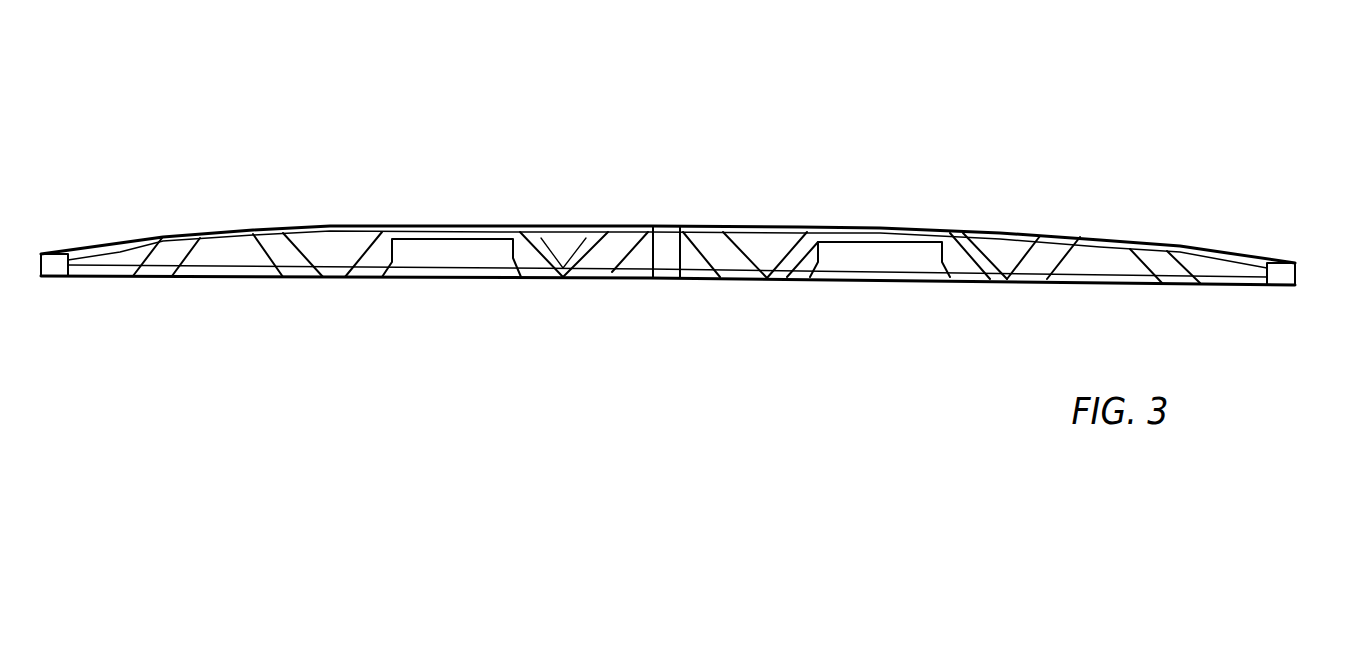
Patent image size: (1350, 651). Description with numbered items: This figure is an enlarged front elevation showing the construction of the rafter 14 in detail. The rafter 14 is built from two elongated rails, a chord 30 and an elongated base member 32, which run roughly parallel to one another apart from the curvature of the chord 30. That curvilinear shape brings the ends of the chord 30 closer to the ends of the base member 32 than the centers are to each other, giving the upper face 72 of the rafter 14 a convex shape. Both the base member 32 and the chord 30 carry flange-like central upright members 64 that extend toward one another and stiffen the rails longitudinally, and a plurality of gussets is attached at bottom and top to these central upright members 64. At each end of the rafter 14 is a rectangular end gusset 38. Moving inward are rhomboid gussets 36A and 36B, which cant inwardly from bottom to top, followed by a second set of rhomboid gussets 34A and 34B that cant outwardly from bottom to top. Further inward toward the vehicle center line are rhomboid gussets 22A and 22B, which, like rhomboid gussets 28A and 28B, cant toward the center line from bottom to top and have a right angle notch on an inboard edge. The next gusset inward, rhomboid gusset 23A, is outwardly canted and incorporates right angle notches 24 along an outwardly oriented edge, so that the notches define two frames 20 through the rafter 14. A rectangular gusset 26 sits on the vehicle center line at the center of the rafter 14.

The rafter 14 is at (1023, 57).
The frame 20 is at (890, 262).
The rhomboid gusset 22A is at (360, 267).
The rhomboid gusset 22B is at (797, 272).
The rhomboid gusset 23A is at (538, 266).
The right angle notch 24 is at (428, 248).
The rectangular gusset 26 is at (668, 278).
The rhomboid gusset 28A is at (617, 238).
The rhomboid gusset 28B is at (713, 240).
The chord 30 is at (1113, 243).
The elongated base member 32 is at (1108, 284).
The rhomboid gusset 34A is at (302, 268).
The rhomboid gusset 34B is at (1062, 243).
The rhomboid gusset 36A is at (170, 253).
The rhomboid gusset 36B is at (1170, 250).
The rectangular end gusset 38 is at (68, 268).
The central upright member 64 is at (335, 230).
The upper face 72 is at (546, 227).